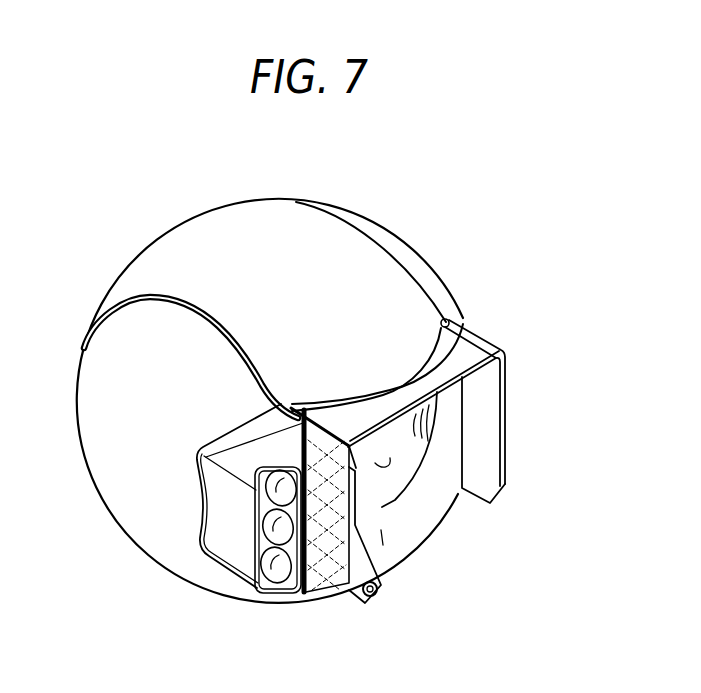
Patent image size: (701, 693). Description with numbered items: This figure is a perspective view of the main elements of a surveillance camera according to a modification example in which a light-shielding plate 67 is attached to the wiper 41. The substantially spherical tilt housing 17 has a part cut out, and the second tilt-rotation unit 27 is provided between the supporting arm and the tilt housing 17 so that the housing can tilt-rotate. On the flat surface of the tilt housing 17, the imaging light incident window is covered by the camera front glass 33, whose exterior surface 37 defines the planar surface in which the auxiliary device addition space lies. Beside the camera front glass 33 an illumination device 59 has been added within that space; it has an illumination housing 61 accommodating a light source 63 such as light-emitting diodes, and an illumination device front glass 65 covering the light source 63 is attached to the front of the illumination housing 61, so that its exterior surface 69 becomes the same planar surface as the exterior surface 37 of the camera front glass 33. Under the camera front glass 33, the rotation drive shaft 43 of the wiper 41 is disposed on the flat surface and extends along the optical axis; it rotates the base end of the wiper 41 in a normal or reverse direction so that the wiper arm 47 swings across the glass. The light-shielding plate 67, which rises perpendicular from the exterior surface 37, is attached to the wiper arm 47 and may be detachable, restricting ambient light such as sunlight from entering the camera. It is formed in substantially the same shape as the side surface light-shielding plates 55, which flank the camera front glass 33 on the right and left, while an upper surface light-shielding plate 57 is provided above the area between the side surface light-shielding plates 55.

The tilt housing 17 is at (233, 228).
The second tilt-rotation unit 27 is at (418, 263).
The exterior surface 37 is at (390, 460).
The upper surface light-shielding plate 57 is at (467, 352).
The side surface light-shielding plates 55 is at (505, 392).
The camera front glass 33 is at (431, 457).
The illumination device 59 is at (198, 512).
The illumination housing 61 is at (247, 430).
The light source 63 is at (268, 447).
The exterior surface 69 is at (257, 530).
The illumination device front glass 65 is at (253, 559).
The light-shielding plate 67 is at (330, 583).
The wiper 41 is at (378, 556).
The rotation drive shaft 43 is at (377, 592).
The wiper arm 47 is at (385, 541).